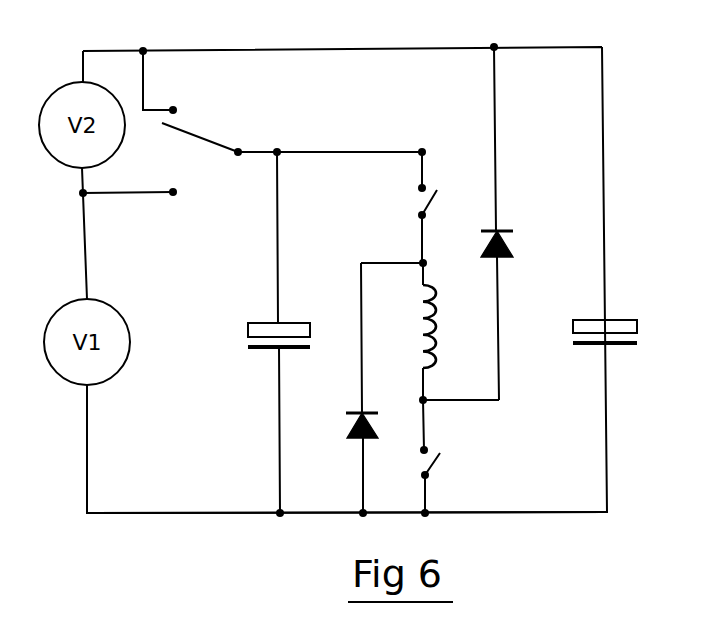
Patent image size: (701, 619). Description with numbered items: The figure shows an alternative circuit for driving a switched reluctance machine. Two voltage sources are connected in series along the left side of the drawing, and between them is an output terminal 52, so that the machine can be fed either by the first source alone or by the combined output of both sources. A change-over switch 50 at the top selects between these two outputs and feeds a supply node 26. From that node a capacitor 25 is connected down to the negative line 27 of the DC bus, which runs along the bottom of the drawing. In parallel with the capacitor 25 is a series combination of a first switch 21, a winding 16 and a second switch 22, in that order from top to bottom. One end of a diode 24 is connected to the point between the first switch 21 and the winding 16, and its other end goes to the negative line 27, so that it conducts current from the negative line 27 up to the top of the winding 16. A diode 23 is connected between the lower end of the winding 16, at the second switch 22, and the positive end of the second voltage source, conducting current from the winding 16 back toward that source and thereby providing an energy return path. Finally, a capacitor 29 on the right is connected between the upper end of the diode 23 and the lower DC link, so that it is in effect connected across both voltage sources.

The winding 16 is at (442, 305).
The first switch 21 is at (418, 203).
The second switch 22 is at (438, 462).
The diode 23 is at (517, 240).
The diode 24 is at (347, 420).
The capacitor 25 is at (300, 323).
The supply node 26 is at (333, 150).
The negative line 27 is at (150, 513).
The capacitor 29 is at (580, 319).
The change-over switch 50 is at (200, 130).
The output terminal 52 is at (147, 200).